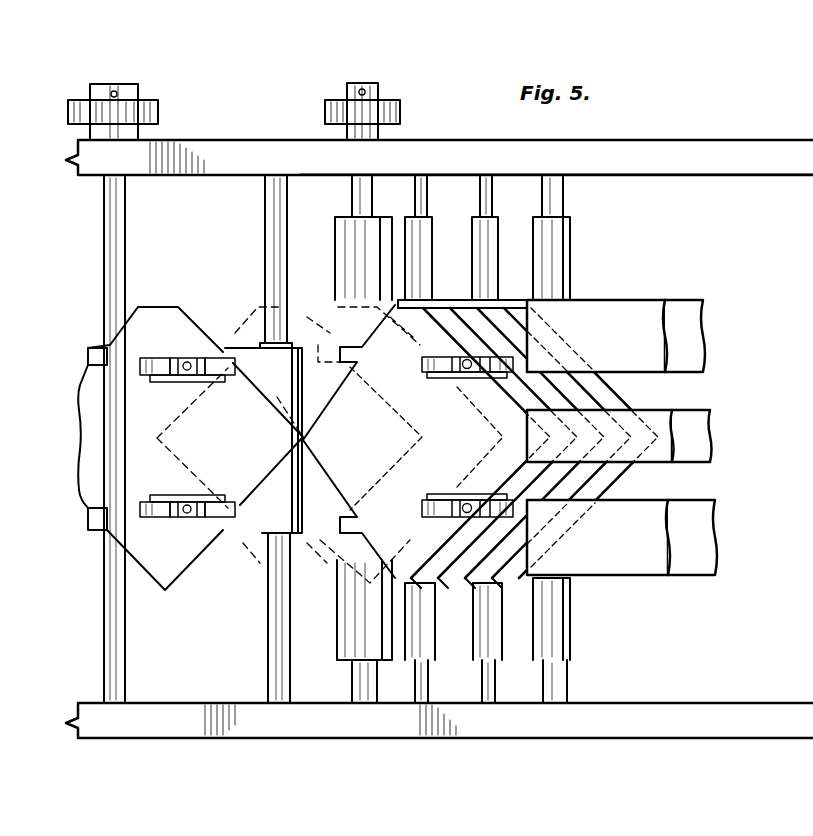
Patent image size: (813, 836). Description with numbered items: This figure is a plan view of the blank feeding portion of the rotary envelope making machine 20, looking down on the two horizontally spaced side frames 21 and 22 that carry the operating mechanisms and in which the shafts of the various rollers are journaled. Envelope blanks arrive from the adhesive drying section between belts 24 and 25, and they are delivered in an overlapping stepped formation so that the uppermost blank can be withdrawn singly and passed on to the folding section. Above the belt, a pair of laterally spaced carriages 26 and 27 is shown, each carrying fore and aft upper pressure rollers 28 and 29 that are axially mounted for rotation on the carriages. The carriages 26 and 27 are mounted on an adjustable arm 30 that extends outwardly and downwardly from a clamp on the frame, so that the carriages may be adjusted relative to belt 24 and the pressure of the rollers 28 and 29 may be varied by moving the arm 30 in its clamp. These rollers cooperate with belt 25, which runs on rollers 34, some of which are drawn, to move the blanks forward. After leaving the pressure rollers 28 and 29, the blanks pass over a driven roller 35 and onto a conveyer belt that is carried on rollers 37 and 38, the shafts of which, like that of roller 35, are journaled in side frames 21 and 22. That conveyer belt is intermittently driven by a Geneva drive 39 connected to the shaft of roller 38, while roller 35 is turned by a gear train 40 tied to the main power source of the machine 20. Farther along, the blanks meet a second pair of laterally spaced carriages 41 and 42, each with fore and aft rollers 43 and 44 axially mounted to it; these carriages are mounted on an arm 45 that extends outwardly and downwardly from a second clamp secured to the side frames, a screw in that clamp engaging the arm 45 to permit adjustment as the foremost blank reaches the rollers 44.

The machine 20 is at (705, 129).
The side frame 21 is at (765, 178).
The side frame 22 is at (757, 700).
The belt 24 is at (646, 300).
The belt 25 is at (512, 290).
The carriage 26 is at (446, 379).
The carriage 27 is at (441, 496).
The fore upper pressure roller 28 is at (421, 367).
The aft upper pressure roller 29 is at (514, 430).
The adjustable arm 30 is at (466, 358).
The roller 34 is at (490, 184).
The driven roller 35 is at (345, 244).
The roller 37 is at (290, 345).
The roller 38 is at (125, 612).
The Geneva drive 39 is at (158, 107).
The gear train 40 is at (398, 113).
The carriage 41 is at (171, 495).
The carriage 42 is at (176, 383).
The fore roller 43 is at (141, 370).
The aft roller 44 is at (245, 364).
The arm 45 is at (191, 360).